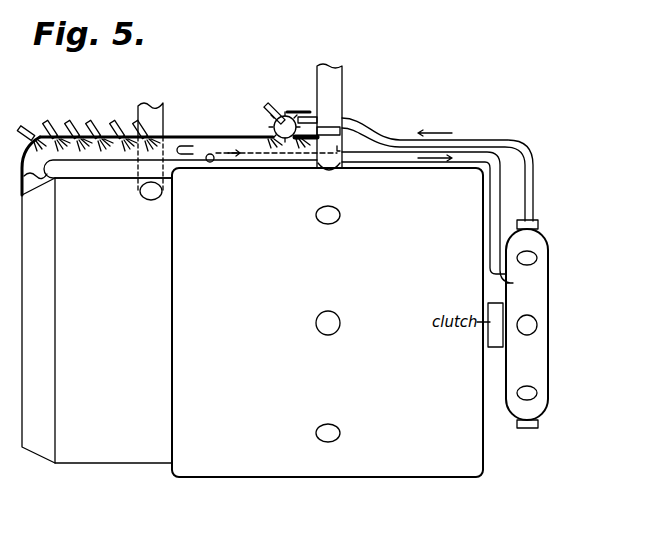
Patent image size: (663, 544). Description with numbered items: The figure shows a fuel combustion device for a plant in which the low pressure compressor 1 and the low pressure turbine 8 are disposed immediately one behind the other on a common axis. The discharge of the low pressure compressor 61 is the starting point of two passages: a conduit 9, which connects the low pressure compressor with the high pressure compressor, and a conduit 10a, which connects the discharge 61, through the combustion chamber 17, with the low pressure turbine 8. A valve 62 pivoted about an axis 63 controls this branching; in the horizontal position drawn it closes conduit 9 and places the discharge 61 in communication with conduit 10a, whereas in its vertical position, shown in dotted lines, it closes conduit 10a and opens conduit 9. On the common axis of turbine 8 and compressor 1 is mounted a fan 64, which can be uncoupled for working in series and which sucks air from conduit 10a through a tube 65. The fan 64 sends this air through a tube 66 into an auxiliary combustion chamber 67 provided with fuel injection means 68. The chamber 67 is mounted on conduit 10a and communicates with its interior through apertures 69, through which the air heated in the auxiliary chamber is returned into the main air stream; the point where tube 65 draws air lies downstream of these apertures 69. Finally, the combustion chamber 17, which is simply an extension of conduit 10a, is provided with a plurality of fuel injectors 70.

The low pressure compressor 1 is at (267, 470).
The low pressure turbine 8 is at (122, 458).
The conduit 9 is at (332, 74).
The conduit 10a is at (218, 134).
The combustion chamber 17 is at (109, 133).
The discharge of the low pressure compressor 61 is at (329, 170).
The valve 62 is at (340, 128).
The axis 63 is at (320, 126).
The fan 64 is at (540, 320).
The tube 65 is at (494, 145).
The tube 66 is at (468, 133).
The auxiliary combustion chamber 67 is at (290, 114).
The fuel injection means 68 is at (267, 106).
The apertures 69 is at (299, 138).
The fuel injectors 70 is at (70, 126).